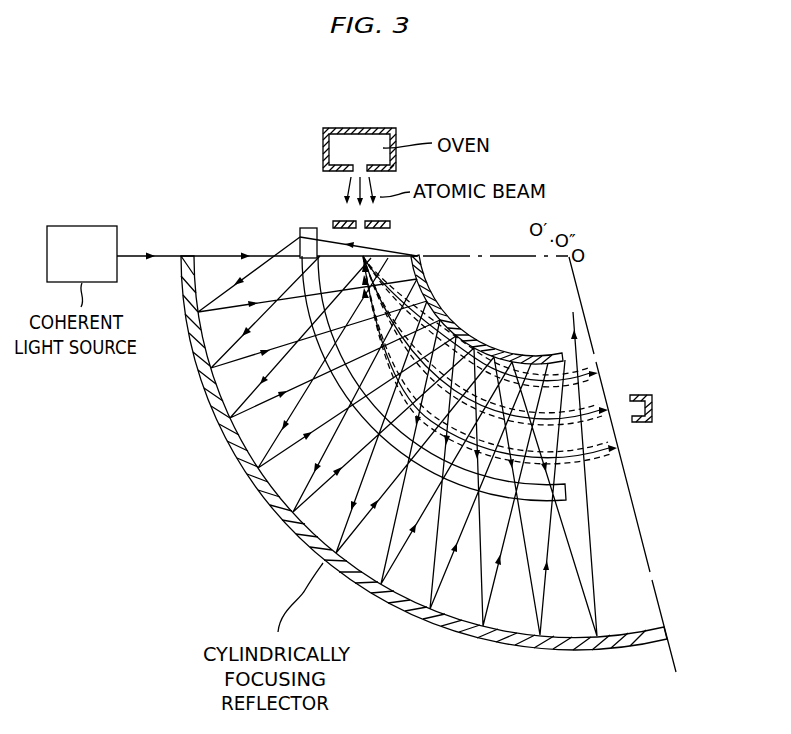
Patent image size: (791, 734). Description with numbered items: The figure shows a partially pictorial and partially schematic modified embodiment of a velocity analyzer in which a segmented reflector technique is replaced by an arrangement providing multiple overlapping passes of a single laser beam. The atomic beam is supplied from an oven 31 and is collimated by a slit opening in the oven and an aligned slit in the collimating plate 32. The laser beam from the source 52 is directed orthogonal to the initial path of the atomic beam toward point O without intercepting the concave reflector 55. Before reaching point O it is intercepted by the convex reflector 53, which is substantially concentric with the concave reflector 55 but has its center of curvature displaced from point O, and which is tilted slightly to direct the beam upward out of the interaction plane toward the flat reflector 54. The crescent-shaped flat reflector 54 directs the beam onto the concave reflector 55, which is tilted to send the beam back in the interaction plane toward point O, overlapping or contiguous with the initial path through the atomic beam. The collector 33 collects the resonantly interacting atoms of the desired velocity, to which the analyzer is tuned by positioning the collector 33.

The oven 31 is at (355, 128).
The collimating plate 32 is at (391, 225).
The collector 33 is at (654, 410).
The source 52 is at (81, 226).
The convex reflector 53 is at (453, 327).
The flat reflector 54 is at (306, 228).
The concave reflector 55 is at (272, 507).